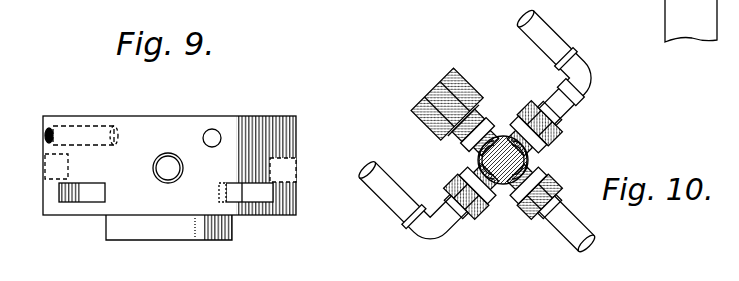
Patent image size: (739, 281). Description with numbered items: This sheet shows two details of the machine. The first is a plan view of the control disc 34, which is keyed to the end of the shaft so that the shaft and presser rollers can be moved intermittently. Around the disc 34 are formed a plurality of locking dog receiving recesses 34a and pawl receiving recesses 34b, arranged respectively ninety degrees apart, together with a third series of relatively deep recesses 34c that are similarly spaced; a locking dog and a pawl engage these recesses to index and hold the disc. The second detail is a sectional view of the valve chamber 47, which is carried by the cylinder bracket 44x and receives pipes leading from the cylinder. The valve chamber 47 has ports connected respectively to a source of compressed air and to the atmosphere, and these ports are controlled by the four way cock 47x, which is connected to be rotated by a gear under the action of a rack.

In FIG. 9, the disc 34 is at (238, 122).
In FIG. 9, the locking dog receiving recesses 34a is at (154, 168).
In FIG. 9, the pawl receiving recesses 34b is at (263, 197).
In FIG. 9, the relatively deep recesses 34c is at (52, 128).
In FIG. 10, the cylinder bracket 44x is at (488, 49).
In FIG. 10, the valve chamber 47 is at (507, 112).
In FIG. 10, the four way cock 47x is at (514, 160).